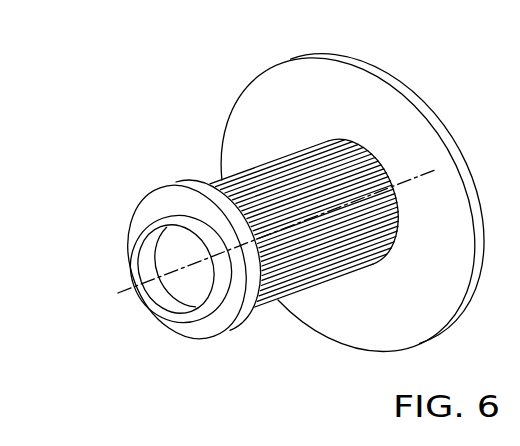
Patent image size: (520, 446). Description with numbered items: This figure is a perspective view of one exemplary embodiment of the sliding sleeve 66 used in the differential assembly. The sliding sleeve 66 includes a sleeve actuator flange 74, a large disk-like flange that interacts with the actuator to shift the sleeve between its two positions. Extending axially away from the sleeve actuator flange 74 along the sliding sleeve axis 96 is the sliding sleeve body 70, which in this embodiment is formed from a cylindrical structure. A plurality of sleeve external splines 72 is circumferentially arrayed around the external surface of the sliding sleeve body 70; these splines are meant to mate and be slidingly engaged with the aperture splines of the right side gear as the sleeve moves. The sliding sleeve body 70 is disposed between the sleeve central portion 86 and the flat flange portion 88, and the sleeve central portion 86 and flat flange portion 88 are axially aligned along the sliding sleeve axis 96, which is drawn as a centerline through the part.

The sliding sleeve 66 is at (227, 62).
The sliding sleeve body 70 is at (240, 162).
The sleeve external splines 72 is at (314, 258).
The sleeve actuator flange 74 is at (397, 135).
The sleeve central portion 86 is at (190, 285).
The flat flange portion 88 is at (229, 323).
The sliding sleeve axis 96 is at (135, 285).